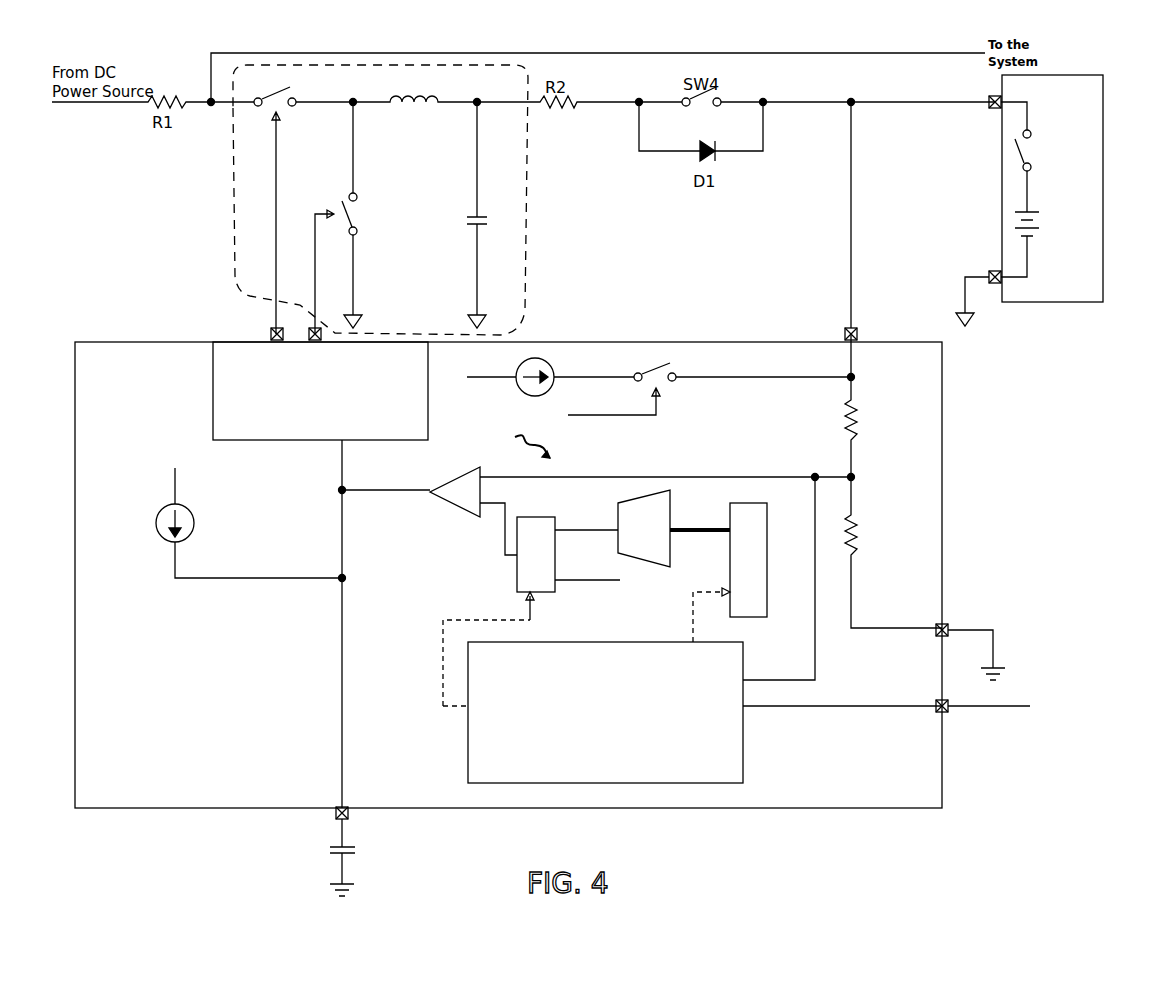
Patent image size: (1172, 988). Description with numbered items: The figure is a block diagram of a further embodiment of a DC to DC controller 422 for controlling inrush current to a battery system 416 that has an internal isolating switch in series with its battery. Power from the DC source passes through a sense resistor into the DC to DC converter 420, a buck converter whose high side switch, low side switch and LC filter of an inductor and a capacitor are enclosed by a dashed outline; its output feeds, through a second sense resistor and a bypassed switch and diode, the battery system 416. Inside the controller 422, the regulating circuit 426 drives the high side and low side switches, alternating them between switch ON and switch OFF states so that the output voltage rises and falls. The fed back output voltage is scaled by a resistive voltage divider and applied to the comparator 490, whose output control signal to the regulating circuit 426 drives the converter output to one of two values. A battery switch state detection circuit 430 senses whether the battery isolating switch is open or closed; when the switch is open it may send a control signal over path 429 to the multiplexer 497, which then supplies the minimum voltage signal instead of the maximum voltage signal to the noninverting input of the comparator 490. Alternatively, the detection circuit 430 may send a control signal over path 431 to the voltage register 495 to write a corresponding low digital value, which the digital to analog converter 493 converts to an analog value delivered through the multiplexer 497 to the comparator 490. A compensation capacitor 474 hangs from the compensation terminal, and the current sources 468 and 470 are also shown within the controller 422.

The battery system 416 is at (1103, 128).
The DC to DC converter 420 is at (236, 217).
The DC to DC controller 422 is at (942, 420).
The regulating circuit 426 is at (213, 388).
The current source 468 is at (520, 389).
The compensation current source I COMP 470 is at (160, 529).
The comparator 490 is at (452, 478).
The digital to analog converter 493 is at (666, 503).
The voltage register 495 is at (752, 501).
The multiplexer 497 is at (517, 571).
The path 429 is at (443, 661).
The path 431 is at (693, 618).
The battery switch state detection circuit 430 is at (748, 762).
The compensation capacitor C_comp 474 is at (318, 851).